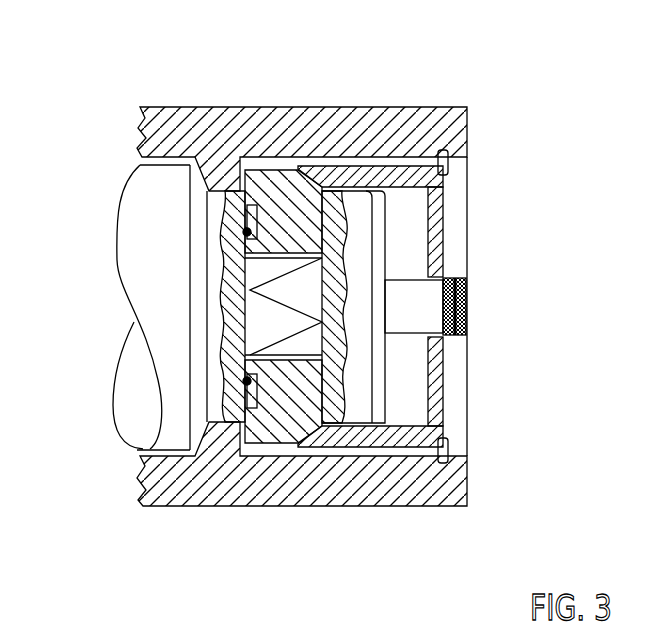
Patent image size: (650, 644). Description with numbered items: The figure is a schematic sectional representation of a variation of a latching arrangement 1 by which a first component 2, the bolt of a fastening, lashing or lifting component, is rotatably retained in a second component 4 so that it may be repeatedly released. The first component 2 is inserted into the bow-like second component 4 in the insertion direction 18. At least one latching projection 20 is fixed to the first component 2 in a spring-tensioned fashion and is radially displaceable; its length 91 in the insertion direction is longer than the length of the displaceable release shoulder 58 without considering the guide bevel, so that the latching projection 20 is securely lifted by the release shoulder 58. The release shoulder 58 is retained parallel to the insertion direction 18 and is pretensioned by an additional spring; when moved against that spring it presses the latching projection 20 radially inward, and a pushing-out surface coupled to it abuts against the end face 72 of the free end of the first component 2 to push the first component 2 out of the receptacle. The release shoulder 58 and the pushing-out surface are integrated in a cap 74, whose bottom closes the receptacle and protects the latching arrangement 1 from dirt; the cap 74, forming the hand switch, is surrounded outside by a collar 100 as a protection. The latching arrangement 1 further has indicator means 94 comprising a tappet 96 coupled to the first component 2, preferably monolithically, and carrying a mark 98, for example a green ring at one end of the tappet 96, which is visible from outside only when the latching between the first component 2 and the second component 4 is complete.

The latching arrangement 1 is at (180, 80).
The first component 2 is at (134, 272).
The second component 4 is at (157, 492).
The insertion direction 18 is at (87, 245).
The latching projection 20 is at (282, 428).
The release shoulder 58 is at (300, 112).
The end face 72 is at (387, 362).
The cap 74 is at (443, 393).
The length of the latching projection 91 is at (298, 170).
The indicator means 94 is at (479, 216).
The tappet 96 is at (430, 303).
The mark 98 is at (450, 280).
The collar 100 is at (466, 450).